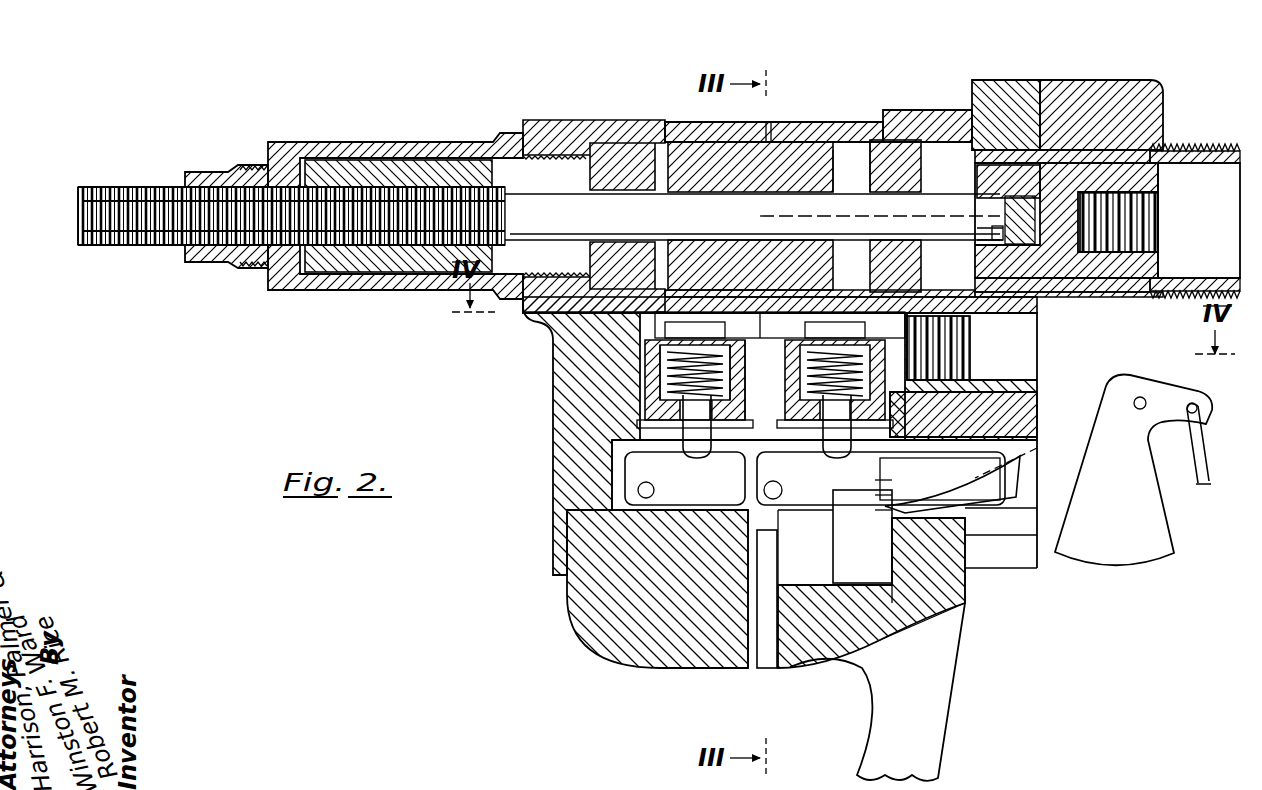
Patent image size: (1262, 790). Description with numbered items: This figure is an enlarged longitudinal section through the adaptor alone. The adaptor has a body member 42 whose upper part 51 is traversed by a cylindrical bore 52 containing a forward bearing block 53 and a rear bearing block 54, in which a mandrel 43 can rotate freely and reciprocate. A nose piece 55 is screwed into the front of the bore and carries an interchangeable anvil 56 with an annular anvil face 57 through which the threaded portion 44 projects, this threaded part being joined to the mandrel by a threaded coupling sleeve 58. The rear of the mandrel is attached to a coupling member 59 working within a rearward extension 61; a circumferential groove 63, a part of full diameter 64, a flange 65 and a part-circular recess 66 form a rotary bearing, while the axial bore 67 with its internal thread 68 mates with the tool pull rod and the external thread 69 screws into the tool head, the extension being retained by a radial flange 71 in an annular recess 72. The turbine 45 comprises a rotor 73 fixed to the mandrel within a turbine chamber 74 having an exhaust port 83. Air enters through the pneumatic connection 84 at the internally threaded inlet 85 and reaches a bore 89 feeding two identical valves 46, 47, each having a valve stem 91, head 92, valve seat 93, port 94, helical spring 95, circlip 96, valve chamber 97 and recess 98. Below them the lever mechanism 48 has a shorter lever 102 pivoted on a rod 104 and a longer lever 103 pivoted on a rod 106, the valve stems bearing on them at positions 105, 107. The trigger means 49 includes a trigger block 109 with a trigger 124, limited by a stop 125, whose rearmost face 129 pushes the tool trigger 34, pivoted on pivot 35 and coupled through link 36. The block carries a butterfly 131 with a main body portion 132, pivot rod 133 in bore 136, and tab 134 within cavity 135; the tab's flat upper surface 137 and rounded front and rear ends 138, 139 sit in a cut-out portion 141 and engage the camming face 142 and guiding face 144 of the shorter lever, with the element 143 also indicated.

The trigger 34 is at (1155, 538).
The pivot 35 is at (1142, 397).
The link 36 is at (1203, 451).
The body member 42 is at (552, 346).
The mandrel 43 is at (532, 212).
The threaded portion 44 is at (113, 188).
The turbine 45 is at (826, 164).
The valve 46 is at (704, 370).
The valve 47 is at (836, 320).
The lever mechanism 48 is at (794, 474).
The trigger means 49 is at (972, 607).
The upper part 51 is at (651, 130).
The cylindrical bore 52 is at (869, 176).
The forward bearing block 53 is at (606, 142).
The rear bearing block 54 is at (920, 140).
The nose piece 55 is at (325, 142).
The anvil 56 is at (233, 170).
The annular anvil face 57 is at (186, 174).
The threaded coupling sleeve 58 is at (415, 160).
The coupling member 59 is at (1160, 151).
The rearward extension 61 is at (1130, 167).
The circumferential groove 63 is at (990, 240).
The part of full diameter 64 is at (1008, 241).
The flange 65 is at (978, 181).
The part-circular recess 66 is at (1020, 220).
The axial bore 67 is at (1150, 223).
The internal thread 68 is at (1150, 253).
The external thread 69 is at (1195, 150).
The radial flange 71 is at (1098, 152).
The annular recess 72 is at (1048, 145).
The rotor 73 is at (805, 140).
The turbine chamber 74 is at (862, 160).
The exhaust port 83 is at (770, 130).
The pneumatic connection 84 is at (1040, 325).
The internally threaded inlet 85 is at (960, 380).
The bore 89 is at (760, 317).
The valve stem 91 is at (661, 387).
The head 92 is at (690, 322).
The valve seat 93 is at (658, 340).
The port 94 is at (722, 340).
The helical spring 95 is at (661, 369).
The circlip 96 is at (703, 440).
The valve chamber 97 is at (740, 428).
The recess 98 is at (800, 322).
The lever 102 is at (862, 607).
The lever 103 is at (770, 505).
The rod 104 is at (790, 512).
The position 105 is at (838, 448).
The rod 106 is at (655, 490).
The position 107 is at (684, 440).
The trigger block 109 is at (665, 660).
The trigger 124 is at (866, 736).
The stop 125 is at (555, 577).
The rearmost face 129 is at (966, 561).
The butterfly 131 is at (868, 614).
The main body portion 132 is at (893, 622).
The pivot rod 133 is at (786, 650).
The tab 134 is at (940, 477).
The cavity 135 is at (752, 560).
The bore 136 is at (767, 668).
The flat upper surface 137 is at (874, 488).
The front end 138 is at (870, 514).
The rear end 139 is at (872, 500).
The cut-out portion 141 is at (963, 414).
The camming face 142 is at (1001, 521).
The wedge 143 is at (955, 488).
The guiding face 144 is at (1032, 453).